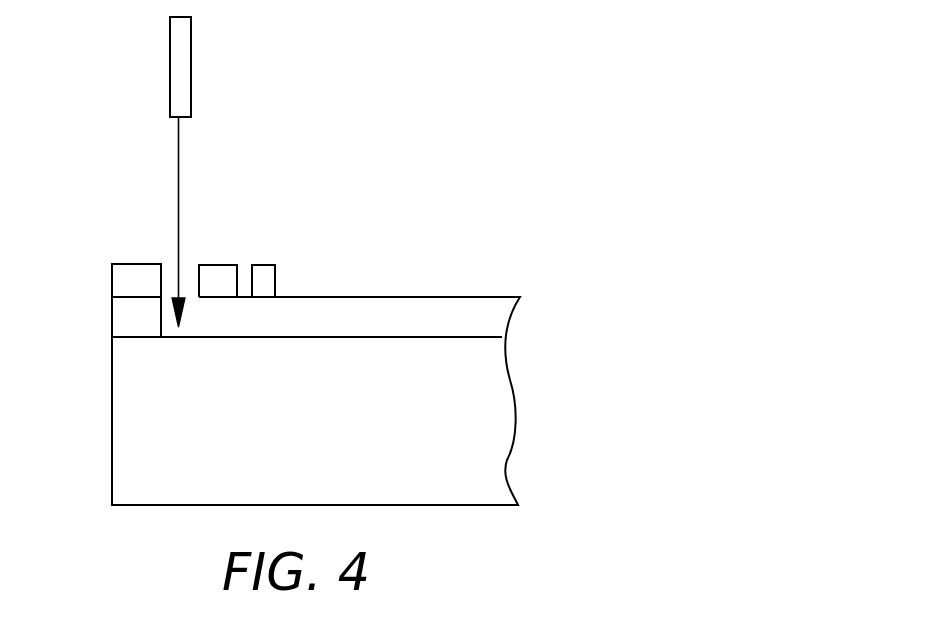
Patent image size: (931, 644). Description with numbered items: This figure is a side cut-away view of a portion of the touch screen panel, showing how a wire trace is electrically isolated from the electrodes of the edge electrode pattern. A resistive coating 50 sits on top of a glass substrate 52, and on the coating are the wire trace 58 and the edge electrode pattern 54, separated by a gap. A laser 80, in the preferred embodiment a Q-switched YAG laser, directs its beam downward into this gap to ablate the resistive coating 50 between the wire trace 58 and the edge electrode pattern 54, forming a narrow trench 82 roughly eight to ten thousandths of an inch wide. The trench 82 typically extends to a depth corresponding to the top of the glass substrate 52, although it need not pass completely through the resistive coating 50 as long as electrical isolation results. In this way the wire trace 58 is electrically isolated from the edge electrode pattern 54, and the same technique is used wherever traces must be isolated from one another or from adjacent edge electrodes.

The laser 80 is at (170, 68).
The trench 82 is at (178, 282).
The wire trace 58 is at (138, 264).
The edge electrode pattern 54 is at (275, 253).
The resistive coating 50 is at (498, 318).
The glass substrate 52 is at (490, 413).